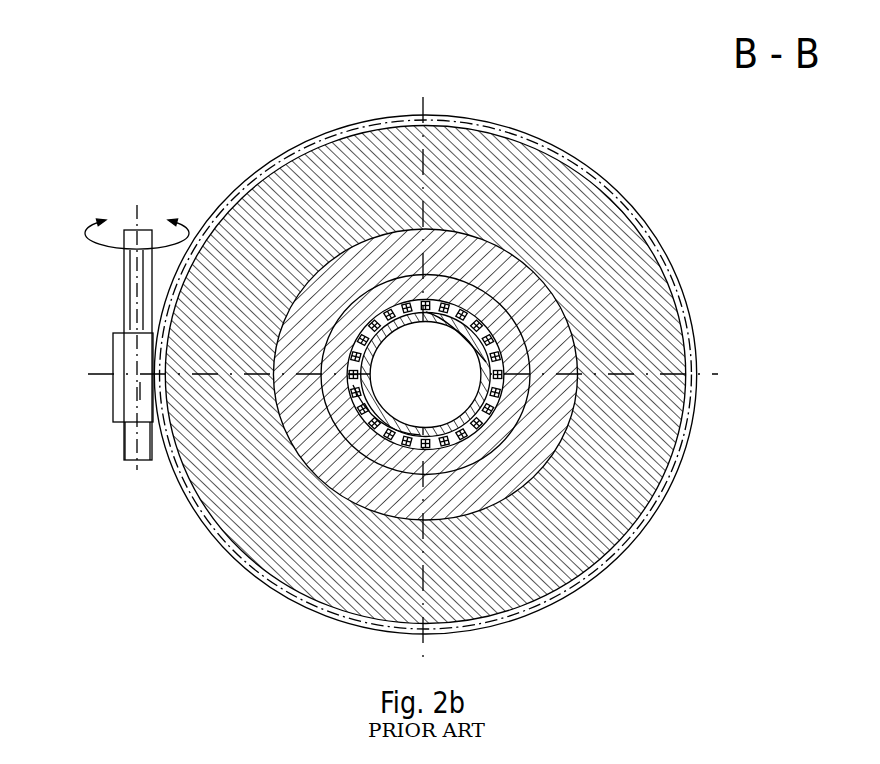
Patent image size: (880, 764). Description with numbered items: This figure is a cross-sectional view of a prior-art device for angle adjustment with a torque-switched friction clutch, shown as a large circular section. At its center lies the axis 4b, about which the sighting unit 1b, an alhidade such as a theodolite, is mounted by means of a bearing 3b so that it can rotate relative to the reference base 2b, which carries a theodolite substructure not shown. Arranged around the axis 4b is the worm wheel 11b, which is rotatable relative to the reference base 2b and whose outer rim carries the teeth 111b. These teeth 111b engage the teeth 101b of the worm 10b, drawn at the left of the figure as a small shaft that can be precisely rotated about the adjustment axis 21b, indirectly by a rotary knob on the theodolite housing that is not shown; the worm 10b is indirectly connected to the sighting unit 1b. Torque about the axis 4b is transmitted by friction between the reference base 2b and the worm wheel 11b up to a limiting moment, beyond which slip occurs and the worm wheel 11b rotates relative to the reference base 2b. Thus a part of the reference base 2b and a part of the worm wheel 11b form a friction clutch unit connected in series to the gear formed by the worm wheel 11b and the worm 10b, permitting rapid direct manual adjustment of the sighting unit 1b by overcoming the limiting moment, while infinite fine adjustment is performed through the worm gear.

The sighting unit 1b is at (484, 355).
The reference base 2b is at (505, 338).
The bearing 3b is at (347, 285).
The axis 4b is at (420, 302).
The worm wheel 11b is at (273, 240).
The teeth of the worm wheel 111b is at (210, 220).
The adjustment axis 21b is at (137, 217).
The teeth of the worm 101b is at (117, 423).
The worm 10b is at (138, 463).